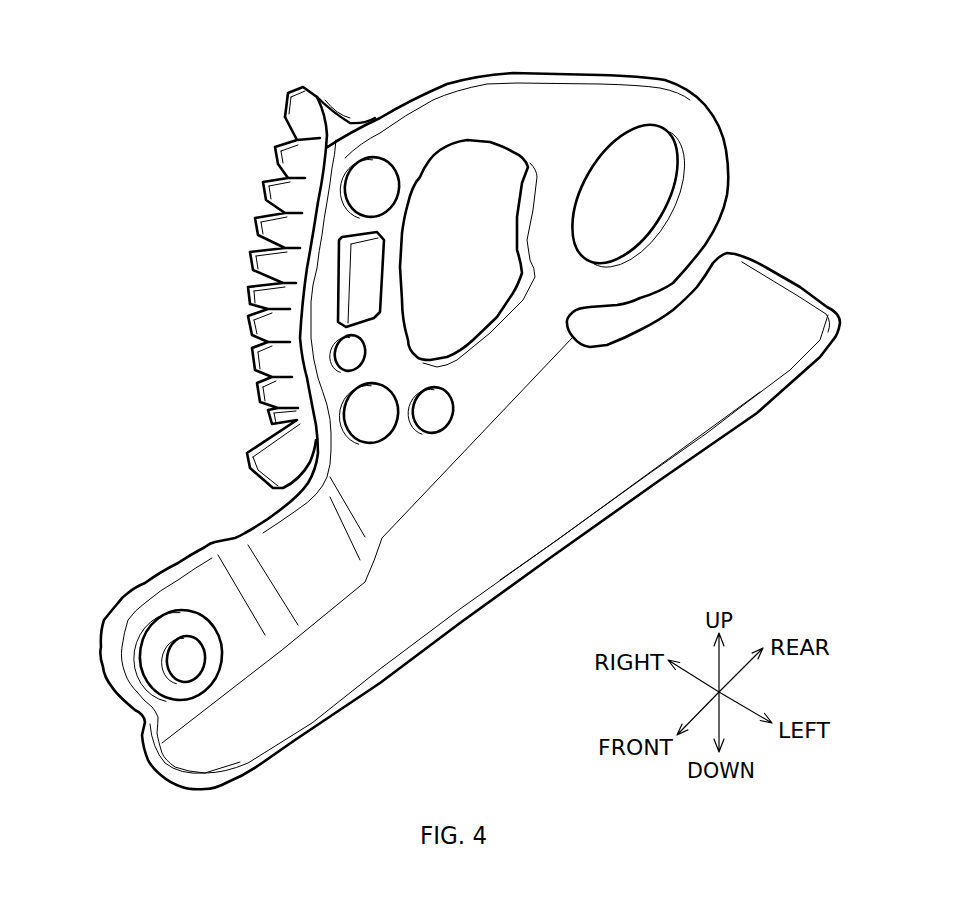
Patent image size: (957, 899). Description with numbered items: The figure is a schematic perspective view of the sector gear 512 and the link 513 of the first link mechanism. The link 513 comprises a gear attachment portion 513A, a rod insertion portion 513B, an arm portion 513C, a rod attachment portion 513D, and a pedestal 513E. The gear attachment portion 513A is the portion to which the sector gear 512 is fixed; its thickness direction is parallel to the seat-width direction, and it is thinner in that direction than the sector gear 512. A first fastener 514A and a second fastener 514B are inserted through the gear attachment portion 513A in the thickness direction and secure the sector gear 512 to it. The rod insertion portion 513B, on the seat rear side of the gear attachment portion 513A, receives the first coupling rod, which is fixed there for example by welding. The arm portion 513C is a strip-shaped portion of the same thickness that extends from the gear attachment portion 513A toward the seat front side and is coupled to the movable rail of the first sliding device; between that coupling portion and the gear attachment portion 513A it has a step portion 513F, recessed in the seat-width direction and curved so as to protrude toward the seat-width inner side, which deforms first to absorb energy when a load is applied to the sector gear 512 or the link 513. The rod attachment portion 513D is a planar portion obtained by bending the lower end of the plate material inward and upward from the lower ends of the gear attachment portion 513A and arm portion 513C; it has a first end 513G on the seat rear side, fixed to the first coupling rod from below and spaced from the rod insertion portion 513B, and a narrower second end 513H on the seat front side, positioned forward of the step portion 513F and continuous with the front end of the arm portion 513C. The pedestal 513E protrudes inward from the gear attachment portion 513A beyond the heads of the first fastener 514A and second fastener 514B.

The sector gear 512 is at (327, 118).
The link 513 is at (708, 87).
The gear attachment portion 513A is at (325, 262).
The rod insertion portion 513B is at (715, 167).
The arm portion 513C is at (198, 587).
The rod attachment portion 513D is at (558, 507).
The pedestal 513E is at (367, 247).
The step portion 513F is at (245, 531).
The first end 513G is at (782, 310).
The second end 513H is at (205, 757).
The first fastener 514A is at (365, 190).
The second fastener 514B is at (363, 425).